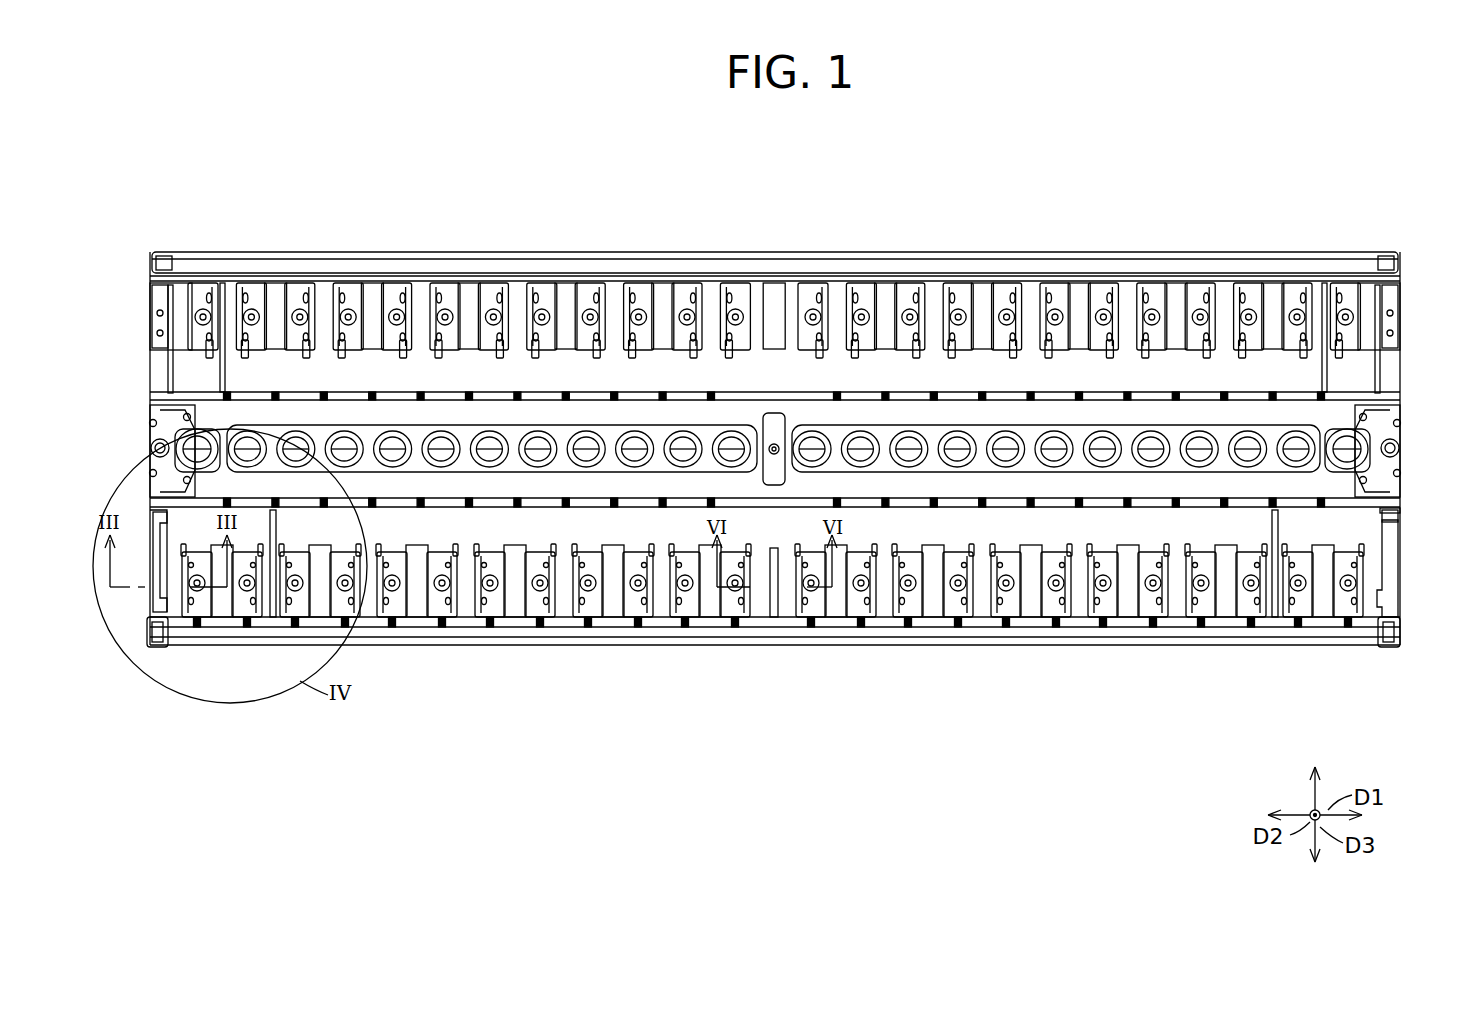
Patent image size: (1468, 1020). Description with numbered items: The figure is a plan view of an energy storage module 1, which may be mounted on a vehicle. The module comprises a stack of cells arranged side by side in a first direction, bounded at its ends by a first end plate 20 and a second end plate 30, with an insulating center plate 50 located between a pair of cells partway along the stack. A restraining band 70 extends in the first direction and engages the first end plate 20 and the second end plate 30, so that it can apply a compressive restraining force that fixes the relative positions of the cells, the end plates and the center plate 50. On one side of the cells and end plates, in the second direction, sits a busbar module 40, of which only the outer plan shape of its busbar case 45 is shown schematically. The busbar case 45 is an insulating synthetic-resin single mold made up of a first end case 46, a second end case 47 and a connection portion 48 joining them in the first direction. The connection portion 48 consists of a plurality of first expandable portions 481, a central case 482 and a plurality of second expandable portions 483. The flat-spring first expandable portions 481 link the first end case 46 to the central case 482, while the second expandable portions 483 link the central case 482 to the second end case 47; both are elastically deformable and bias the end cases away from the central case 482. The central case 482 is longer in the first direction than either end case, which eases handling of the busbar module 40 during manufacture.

The energy storage module 1 is at (1389, 198).
The first end plate 20 is at (158, 607).
The second end plate 30 is at (1393, 607).
The busbar module 40 is at (1390, 537).
The busbar case 45 is at (1390, 739).
The first end case 46 is at (172, 607).
The second end case 47 is at (1373, 600).
The connection portion 48 is at (772, 628).
The center plate 50 is at (775, 600).
The restraining band 70 is at (205, 418).
The first expandable portion 481 is at (262, 546).
The central case 482 is at (769, 548).
The second expandable portion 483 is at (1268, 546).